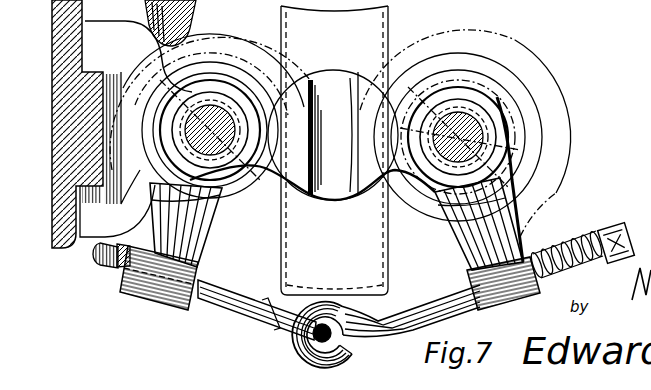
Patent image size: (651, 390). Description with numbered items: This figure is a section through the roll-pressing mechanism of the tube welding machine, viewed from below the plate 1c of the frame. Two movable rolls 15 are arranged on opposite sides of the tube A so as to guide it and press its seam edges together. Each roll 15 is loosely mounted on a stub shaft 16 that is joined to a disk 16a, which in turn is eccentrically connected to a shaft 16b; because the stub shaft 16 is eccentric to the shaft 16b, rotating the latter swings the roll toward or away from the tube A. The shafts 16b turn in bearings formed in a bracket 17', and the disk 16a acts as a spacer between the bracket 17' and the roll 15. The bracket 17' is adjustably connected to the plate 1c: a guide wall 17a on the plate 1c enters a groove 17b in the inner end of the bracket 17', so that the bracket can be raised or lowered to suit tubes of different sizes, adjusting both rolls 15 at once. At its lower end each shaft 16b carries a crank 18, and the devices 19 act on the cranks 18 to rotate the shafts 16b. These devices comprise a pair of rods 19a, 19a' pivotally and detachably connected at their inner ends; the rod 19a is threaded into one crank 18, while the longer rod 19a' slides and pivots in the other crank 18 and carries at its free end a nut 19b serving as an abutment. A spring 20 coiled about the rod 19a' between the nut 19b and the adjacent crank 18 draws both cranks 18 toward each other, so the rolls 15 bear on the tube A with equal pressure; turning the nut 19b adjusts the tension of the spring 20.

The plate 1c is at (83, 242).
The guide wall 17a is at (96, 73).
The groove 17b is at (112, 88).
The bracket 17' is at (95, 267).
The tube A is at (397, 263).
The stub shaft 16 is at (236, 160).
The disk 16a is at (198, 91).
The shaft 16b is at (234, 92).
The movable roll 15 is at (567, 97).
The crank 18 is at (201, 242).
The nut 19b is at (118, 277).
The rod 19a is at (264, 302).
The pressing devices 19 is at (341, 335).
The rod 19a' is at (440, 297).
The spring 20 is at (588, 272).